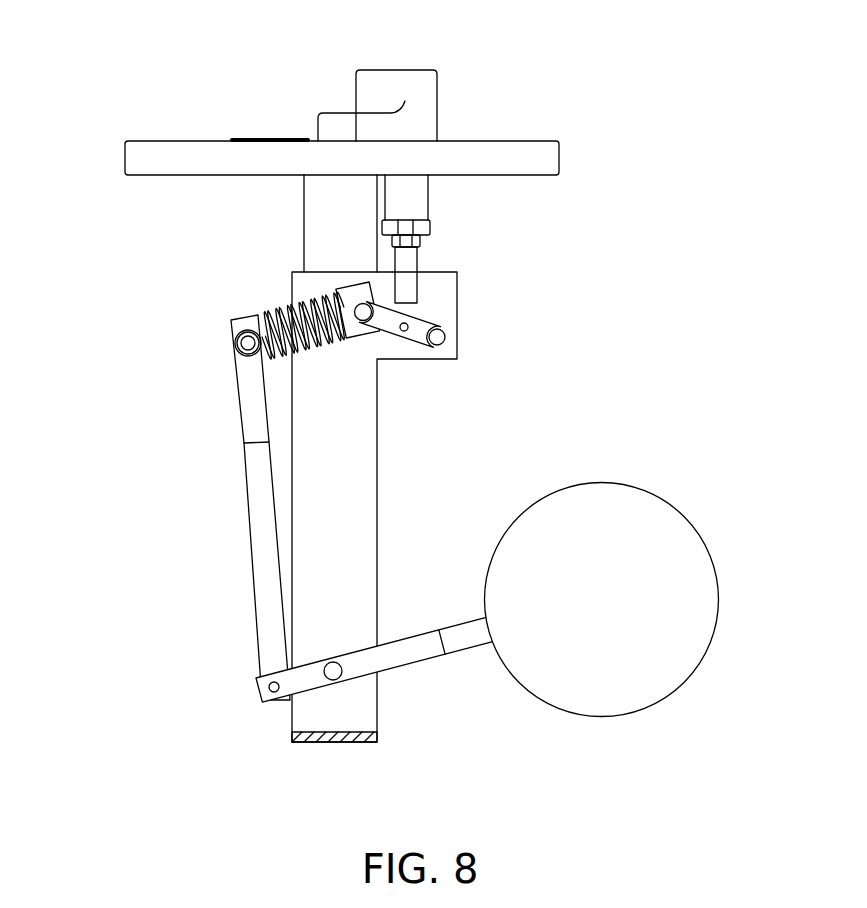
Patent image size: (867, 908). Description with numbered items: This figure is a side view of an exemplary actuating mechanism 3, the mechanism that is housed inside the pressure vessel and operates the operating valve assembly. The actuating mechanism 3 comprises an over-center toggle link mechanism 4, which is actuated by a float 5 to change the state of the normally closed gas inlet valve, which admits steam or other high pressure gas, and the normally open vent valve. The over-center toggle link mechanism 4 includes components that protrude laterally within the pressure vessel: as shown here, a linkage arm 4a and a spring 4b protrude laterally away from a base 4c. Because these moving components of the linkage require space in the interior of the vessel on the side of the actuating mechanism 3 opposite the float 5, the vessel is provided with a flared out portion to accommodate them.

The actuating mechanism 3 is at (56, 71).
The over-center toggle link mechanism 4 is at (207, 712).
The linkage arm 4a is at (250, 396).
The spring 4b is at (277, 316).
The base 4c is at (356, 735).
The float 5 is at (690, 520).